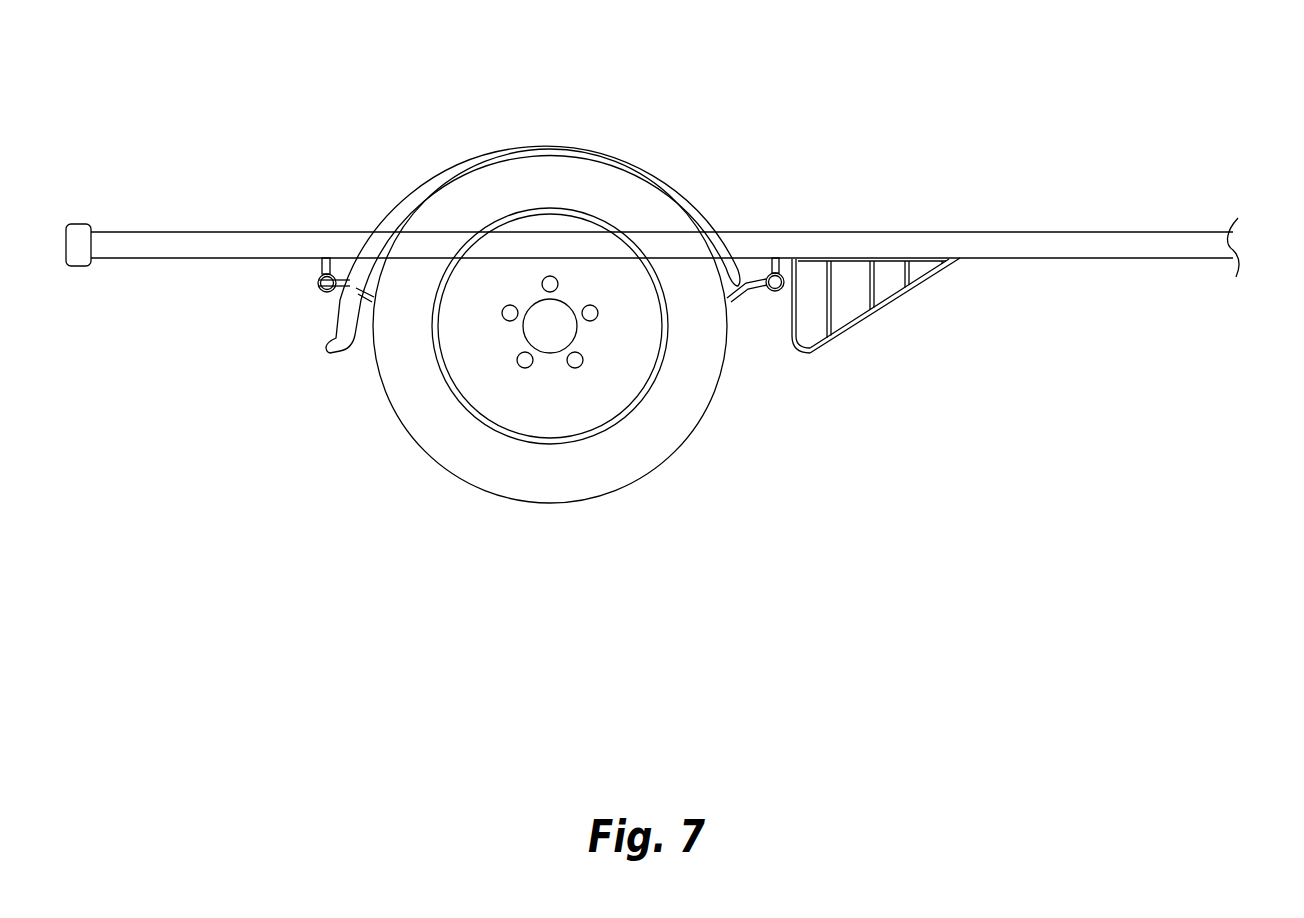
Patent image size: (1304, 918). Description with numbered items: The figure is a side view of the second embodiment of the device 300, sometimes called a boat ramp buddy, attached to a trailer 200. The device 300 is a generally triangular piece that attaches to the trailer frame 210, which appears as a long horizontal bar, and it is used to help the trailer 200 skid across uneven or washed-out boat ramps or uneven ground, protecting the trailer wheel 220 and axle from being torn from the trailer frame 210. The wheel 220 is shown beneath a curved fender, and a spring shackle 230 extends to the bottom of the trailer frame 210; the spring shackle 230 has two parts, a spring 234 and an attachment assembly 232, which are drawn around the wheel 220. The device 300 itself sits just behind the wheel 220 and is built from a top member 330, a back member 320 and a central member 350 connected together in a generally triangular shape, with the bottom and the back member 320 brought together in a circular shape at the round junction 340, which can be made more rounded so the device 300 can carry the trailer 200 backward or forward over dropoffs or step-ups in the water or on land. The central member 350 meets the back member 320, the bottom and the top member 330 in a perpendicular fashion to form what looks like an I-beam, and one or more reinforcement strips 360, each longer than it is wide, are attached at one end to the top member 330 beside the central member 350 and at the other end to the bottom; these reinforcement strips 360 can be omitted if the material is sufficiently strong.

The trailer 200 is at (417, 104).
The trailer frame 210 is at (183, 253).
The trailer wheel 220 is at (683, 450).
The spring shackle 230 is at (325, 304).
The attachment assembly 232 is at (314, 291).
The spring 234 is at (368, 309).
The device 300 is at (922, 348).
The back member 320 is at (791, 317).
The top member 330 is at (859, 256).
The round junction 340 is at (807, 358).
The central member 350 is at (848, 293).
The reinforcement strip 360 is at (834, 268).